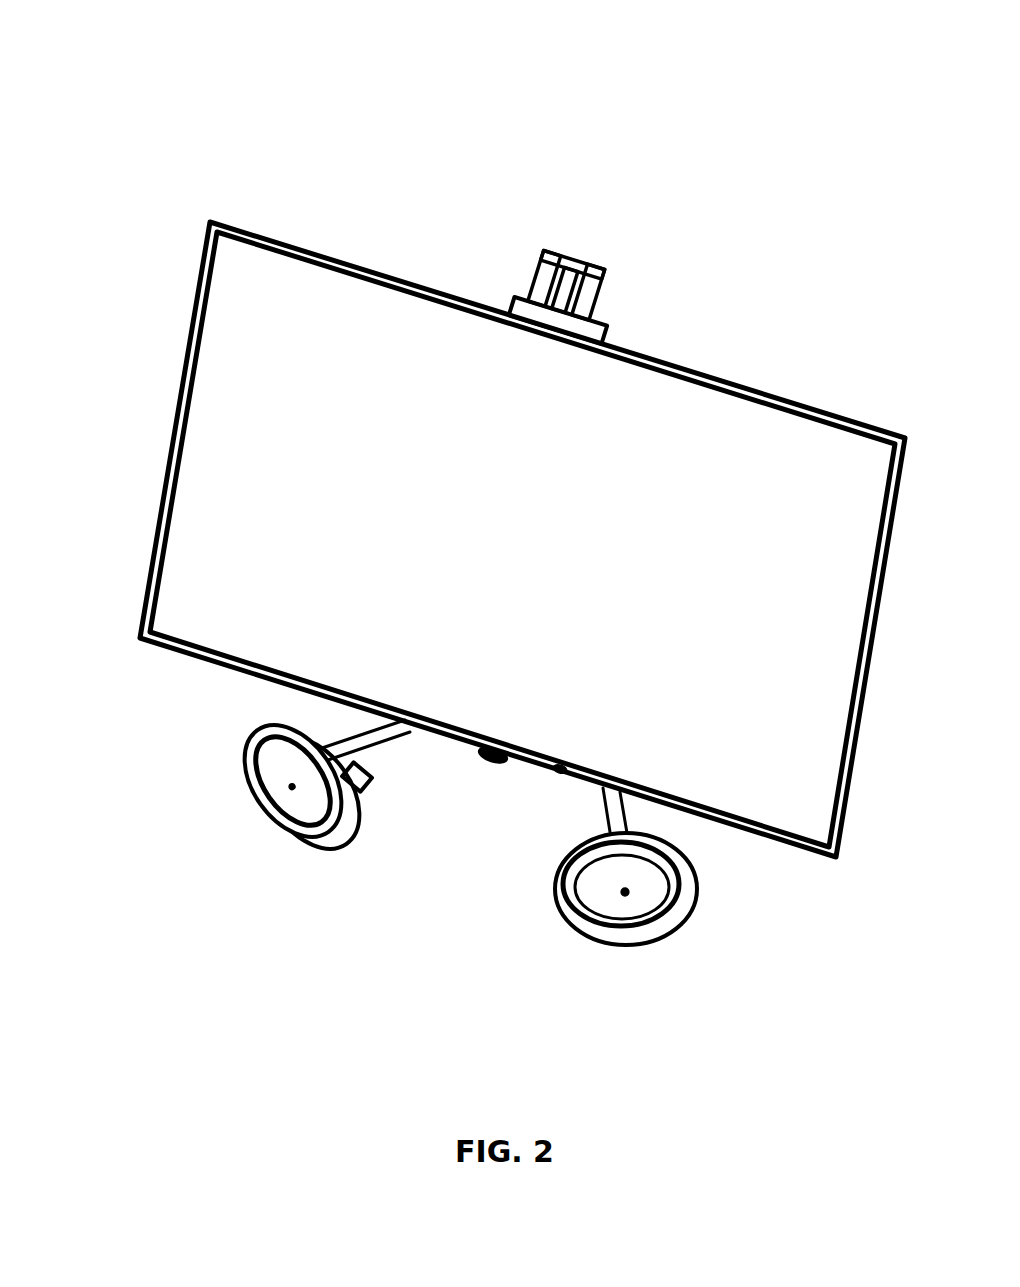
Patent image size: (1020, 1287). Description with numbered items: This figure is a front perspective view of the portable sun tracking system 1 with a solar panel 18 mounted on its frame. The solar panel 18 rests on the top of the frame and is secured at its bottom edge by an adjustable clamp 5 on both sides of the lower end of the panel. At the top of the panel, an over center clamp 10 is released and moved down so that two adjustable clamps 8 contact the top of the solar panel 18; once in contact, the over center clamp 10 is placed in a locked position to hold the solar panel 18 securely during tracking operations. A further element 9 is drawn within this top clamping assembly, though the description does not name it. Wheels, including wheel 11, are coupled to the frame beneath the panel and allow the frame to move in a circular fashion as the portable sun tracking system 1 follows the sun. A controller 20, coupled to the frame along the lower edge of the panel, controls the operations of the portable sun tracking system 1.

The portable sun tracking system 1 is at (290, 101).
The adjustable clamp 5 is at (410, 724).
The adjustable clamp 8 is at (607, 327).
The bracket upright 9 is at (538, 290).
The over center clamp 10 is at (573, 263).
The wheel 11 is at (673, 917).
The solar panel 18 is at (272, 608).
The controller 20 is at (484, 760).